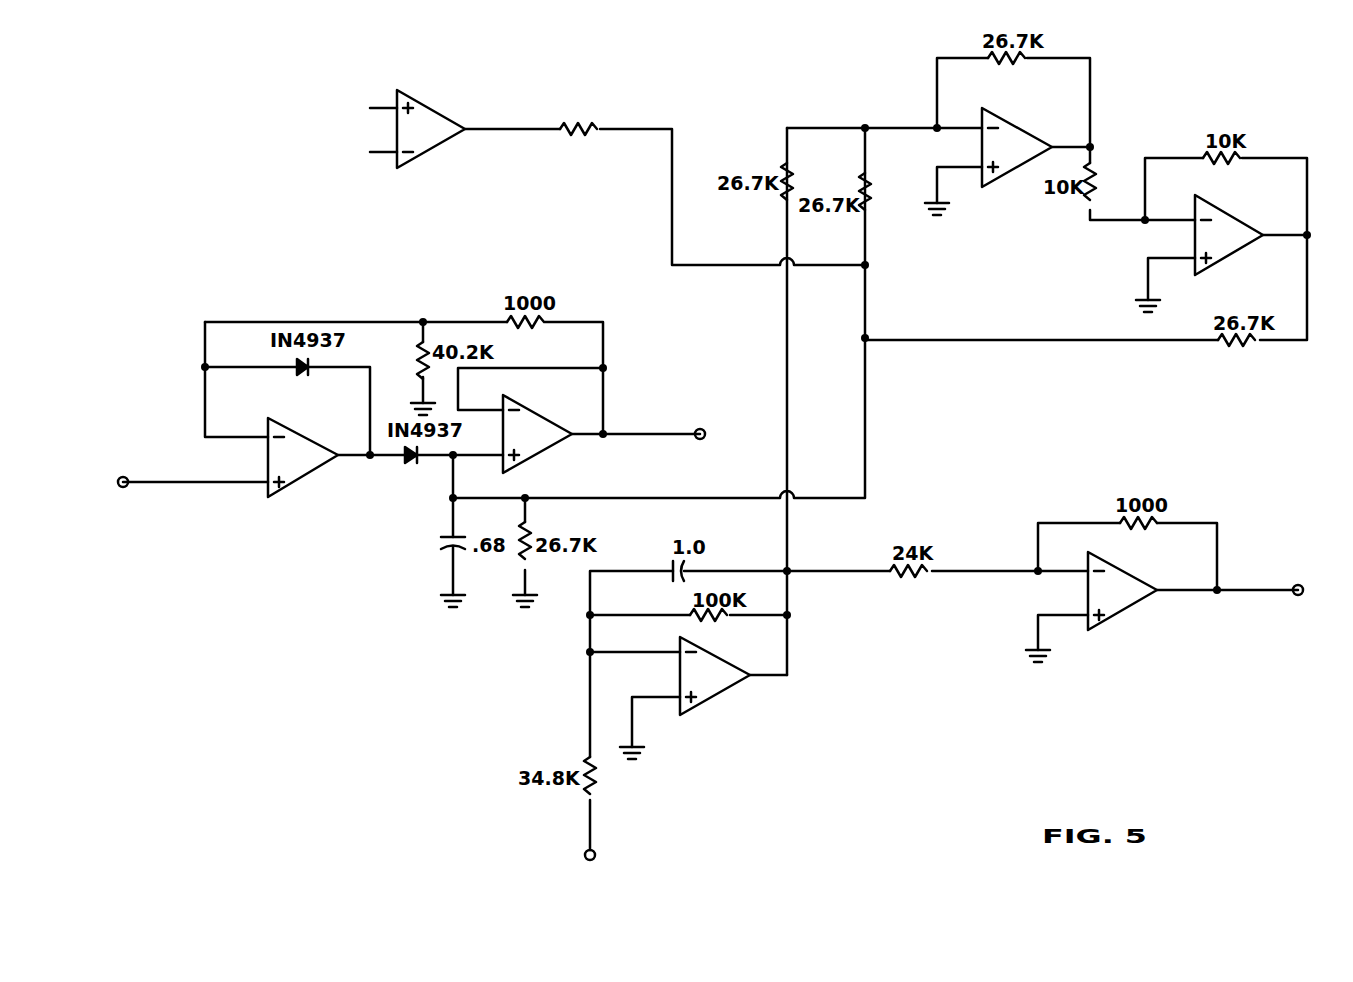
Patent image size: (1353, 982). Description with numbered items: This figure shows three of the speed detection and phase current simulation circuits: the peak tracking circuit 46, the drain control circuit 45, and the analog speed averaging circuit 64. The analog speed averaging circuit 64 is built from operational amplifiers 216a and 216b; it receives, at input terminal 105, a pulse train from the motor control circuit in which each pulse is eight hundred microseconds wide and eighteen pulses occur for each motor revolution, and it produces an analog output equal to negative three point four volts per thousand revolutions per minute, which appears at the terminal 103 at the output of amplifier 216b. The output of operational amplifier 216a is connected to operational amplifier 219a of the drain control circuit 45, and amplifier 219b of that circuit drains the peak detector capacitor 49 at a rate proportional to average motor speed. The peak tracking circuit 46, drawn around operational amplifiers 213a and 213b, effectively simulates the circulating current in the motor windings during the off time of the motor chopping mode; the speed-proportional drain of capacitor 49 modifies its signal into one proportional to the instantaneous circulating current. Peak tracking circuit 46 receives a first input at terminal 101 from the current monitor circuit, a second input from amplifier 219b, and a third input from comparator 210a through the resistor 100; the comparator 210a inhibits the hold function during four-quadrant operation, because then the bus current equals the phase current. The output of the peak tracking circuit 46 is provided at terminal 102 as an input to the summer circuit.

The comparator 210a is at (386, 129).
The resistor 100 is at (581, 117).
The operational amplifier 219a is at (1017, 147).
The operational amplifier 219b is at (1229, 235).
The drain control circuit 45 is at (1173, 121).
The operational amplifier 213a is at (303, 457).
The operational amplifier 213b is at (537, 434).
The operational amplifier 216a is at (715, 676).
The operational amplifier 216b is at (1122, 591).
The terminal 101 is at (125, 488).
The terminal 102 is at (702, 429).
The output terminal 103 is at (1297, 585).
The input terminal 105 is at (595, 852).
The peak tracking circuit 46 is at (420, 533).
The peak detector capacitor 49 is at (448, 547).
The analog speed averaging circuit 64 is at (817, 698).